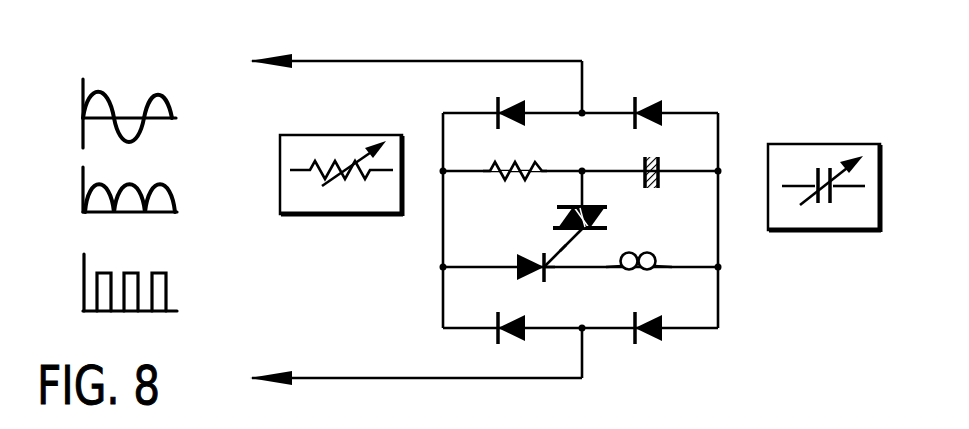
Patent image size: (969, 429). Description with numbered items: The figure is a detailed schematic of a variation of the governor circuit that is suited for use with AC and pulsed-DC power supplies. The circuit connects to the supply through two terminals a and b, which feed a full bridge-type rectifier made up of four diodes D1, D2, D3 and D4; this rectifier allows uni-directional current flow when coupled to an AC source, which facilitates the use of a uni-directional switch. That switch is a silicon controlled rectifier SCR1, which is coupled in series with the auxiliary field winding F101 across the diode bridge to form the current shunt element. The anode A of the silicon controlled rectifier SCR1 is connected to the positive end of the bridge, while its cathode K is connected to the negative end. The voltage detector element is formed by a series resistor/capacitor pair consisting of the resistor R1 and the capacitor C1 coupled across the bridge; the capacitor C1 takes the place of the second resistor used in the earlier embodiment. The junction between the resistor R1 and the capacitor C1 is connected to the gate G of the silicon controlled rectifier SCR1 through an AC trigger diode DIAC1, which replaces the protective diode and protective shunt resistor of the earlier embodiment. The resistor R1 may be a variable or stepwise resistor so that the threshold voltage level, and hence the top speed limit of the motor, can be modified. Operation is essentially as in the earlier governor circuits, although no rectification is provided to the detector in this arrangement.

The terminal a is at (403, 56).
The terminal b is at (402, 374).
The diode D1 is at (529, 103).
The diode D2 is at (667, 103).
The diode D3 is at (512, 343).
The diode D4 is at (644, 343).
The resistor R1 is at (357, 225).
The capacitor C1 is at (762, 210).
The trigger diode DIAC1 is at (623, 218).
The silicon controlled rectifier SCR1 is at (516, 255).
The anode A is at (511, 284).
The cathode K is at (567, 284).
The gate G is at (575, 250).
The auxiliary field winding F101 is at (639, 281).